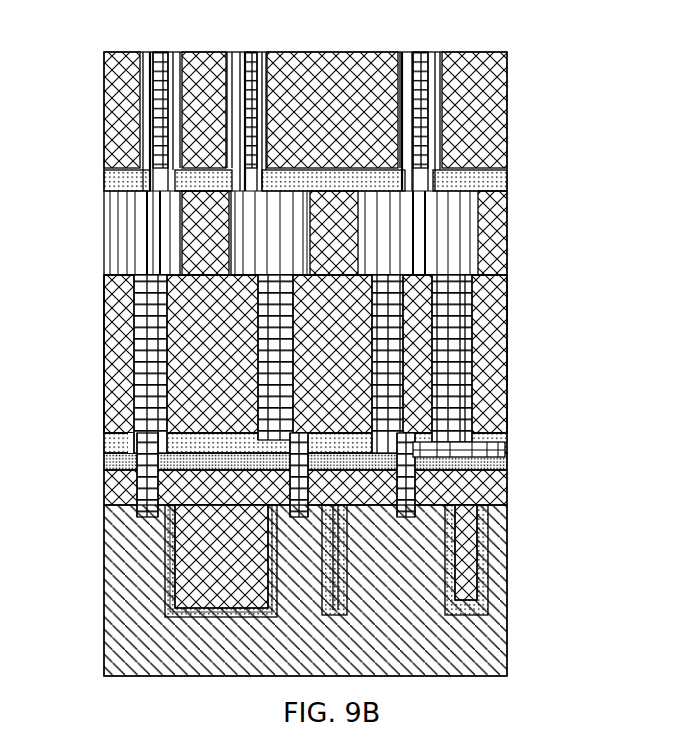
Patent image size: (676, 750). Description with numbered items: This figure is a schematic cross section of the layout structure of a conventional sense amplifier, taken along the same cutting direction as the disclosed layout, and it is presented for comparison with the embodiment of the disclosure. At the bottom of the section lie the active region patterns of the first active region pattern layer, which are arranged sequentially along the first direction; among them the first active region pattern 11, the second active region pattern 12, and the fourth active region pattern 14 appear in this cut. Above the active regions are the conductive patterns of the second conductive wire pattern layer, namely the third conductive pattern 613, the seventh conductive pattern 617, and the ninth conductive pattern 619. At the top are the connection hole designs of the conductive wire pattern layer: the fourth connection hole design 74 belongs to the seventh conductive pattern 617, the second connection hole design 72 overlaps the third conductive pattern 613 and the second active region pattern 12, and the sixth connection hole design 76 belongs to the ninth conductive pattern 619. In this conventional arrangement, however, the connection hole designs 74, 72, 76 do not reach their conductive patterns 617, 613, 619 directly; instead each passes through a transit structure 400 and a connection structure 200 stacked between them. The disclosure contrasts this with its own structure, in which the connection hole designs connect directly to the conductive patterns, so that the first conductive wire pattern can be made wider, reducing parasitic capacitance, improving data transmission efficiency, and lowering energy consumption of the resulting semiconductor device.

The fourth connection hole design 74 is at (162, 55).
The second connection hole design 72 is at (250, 55).
The sixth connection hole design 76 is at (421, 55).
The transit structure 400 is at (135, 258).
The connection structure 200 is at (115, 300).
The third conductive pattern 613 is at (220, 422).
The seventh conductive pattern 617 is at (157, 452).
The ninth conductive pattern 619 is at (413, 450).
The fourth active region pattern 14 is at (170, 540).
The second active region pattern 12 is at (240, 581).
The first active region pattern 11 is at (410, 592).